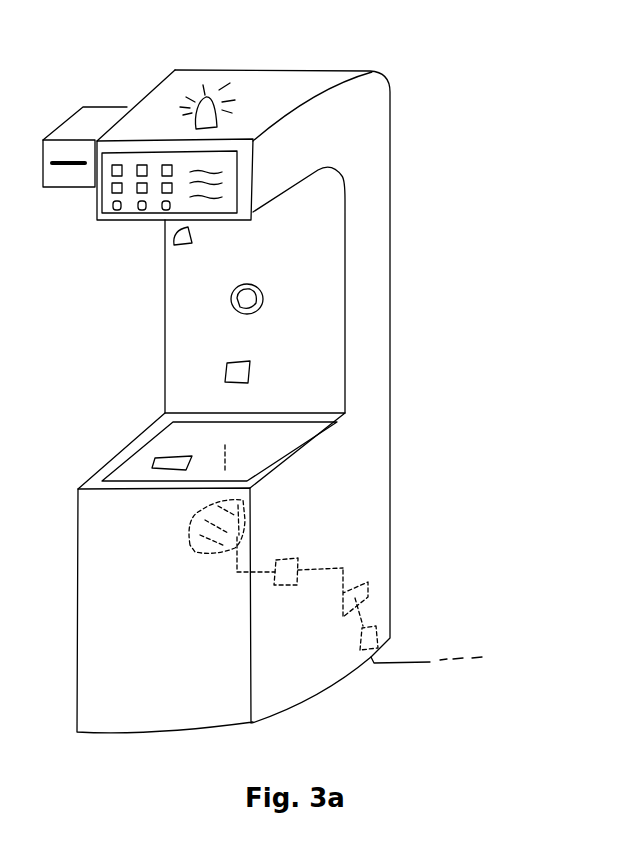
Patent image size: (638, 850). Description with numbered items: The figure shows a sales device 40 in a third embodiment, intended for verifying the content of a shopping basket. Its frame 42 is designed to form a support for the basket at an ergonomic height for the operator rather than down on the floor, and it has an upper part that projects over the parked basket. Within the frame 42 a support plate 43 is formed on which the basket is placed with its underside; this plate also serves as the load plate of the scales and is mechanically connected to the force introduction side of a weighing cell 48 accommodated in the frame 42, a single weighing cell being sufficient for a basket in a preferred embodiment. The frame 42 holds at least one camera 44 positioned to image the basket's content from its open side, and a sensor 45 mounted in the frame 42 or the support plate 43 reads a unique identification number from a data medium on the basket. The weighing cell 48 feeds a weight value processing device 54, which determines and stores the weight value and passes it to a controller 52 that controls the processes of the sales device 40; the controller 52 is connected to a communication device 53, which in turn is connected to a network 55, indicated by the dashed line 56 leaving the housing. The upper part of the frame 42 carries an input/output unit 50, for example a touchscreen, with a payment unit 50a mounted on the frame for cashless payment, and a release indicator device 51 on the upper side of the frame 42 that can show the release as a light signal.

The sales device 40 is at (452, 147).
The frame 42 is at (340, 112).
The support plate 43 is at (285, 432).
The camera 44 is at (198, 237).
The sensor 45 is at (225, 367).
The weighing cell 48 is at (232, 536).
The input/output unit 50 is at (135, 152).
The payment unit 50a is at (41, 154).
The release indicator device 51 is at (227, 82).
The controller 52 is at (368, 590).
The communication device 53 is at (378, 645).
The weight value processing device 54 is at (285, 585).
The network 55 is at (427, 668).
The connection line 56 is at (343, 568).